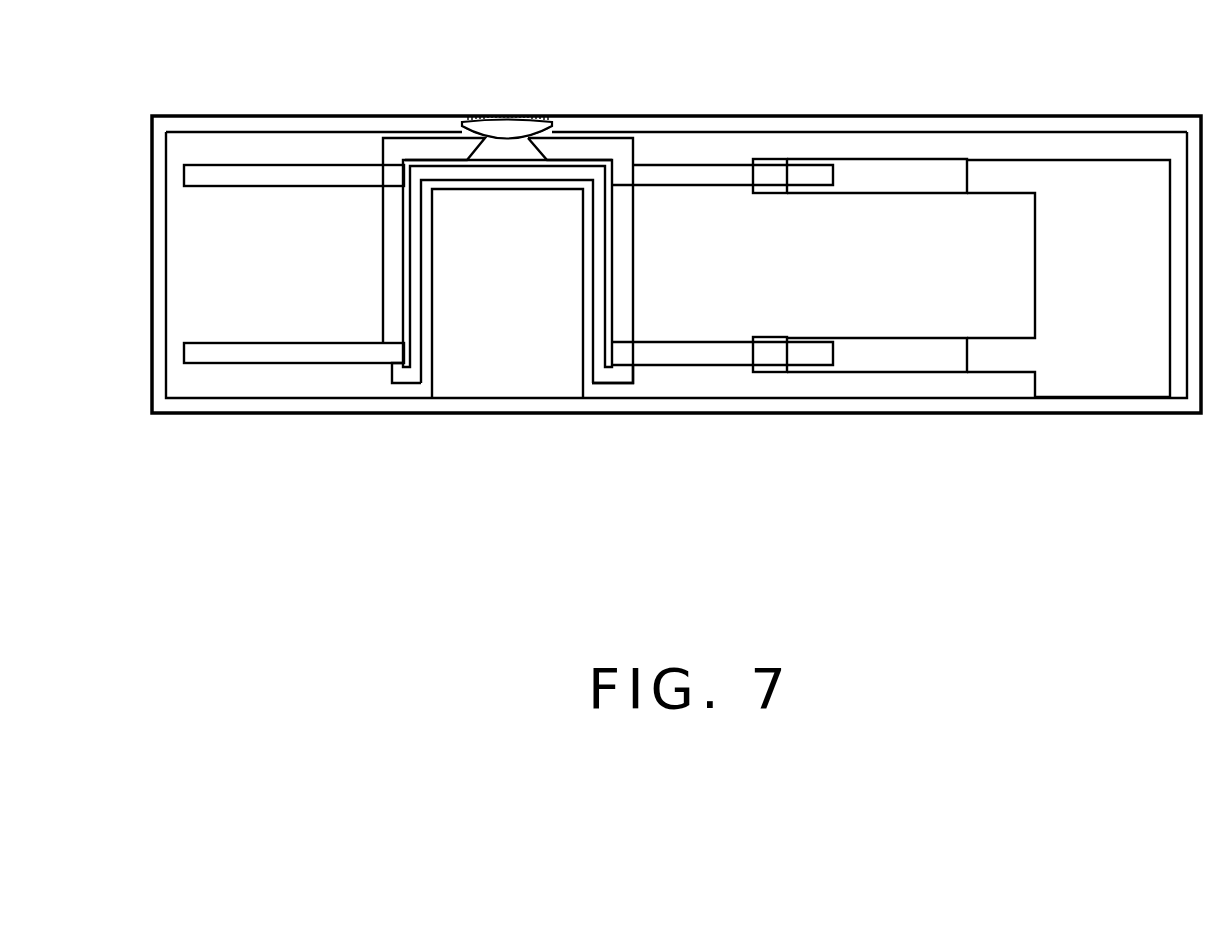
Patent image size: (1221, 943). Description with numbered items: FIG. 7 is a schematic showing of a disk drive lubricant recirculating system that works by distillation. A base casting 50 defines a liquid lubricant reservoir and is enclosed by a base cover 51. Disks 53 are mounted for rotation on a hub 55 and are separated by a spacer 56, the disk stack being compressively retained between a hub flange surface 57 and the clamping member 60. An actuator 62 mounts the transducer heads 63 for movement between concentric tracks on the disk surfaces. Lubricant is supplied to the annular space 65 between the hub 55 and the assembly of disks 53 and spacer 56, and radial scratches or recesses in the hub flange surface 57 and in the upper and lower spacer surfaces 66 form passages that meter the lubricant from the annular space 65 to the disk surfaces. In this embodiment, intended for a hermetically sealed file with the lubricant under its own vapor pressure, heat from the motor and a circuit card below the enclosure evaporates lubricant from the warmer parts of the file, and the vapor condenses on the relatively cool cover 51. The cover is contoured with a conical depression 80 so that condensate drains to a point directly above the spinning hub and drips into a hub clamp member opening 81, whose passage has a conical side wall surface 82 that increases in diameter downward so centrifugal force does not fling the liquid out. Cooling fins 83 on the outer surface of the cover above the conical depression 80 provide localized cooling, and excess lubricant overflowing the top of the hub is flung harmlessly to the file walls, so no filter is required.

The base casting 50 is at (1007, 414).
The base cover 51 is at (1006, 117).
The disks 53 is at (208, 342).
The hub 55 is at (424, 164).
The spacer 56 is at (383, 260).
The hub flange surface 57 is at (403, 368).
The clamping member 60 is at (598, 137).
The actuator 62 is at (1120, 160).
The transducer heads 63 is at (770, 337).
The annular space 65 is at (406, 160).
The upper and lower spacer surfaces 66 is at (623, 186).
The conical depression 80 is at (535, 147).
The hub clamp member opening 81 is at (551, 126).
The conical side wall surface 82 is at (537, 141).
The cooling fins 83 is at (518, 118).